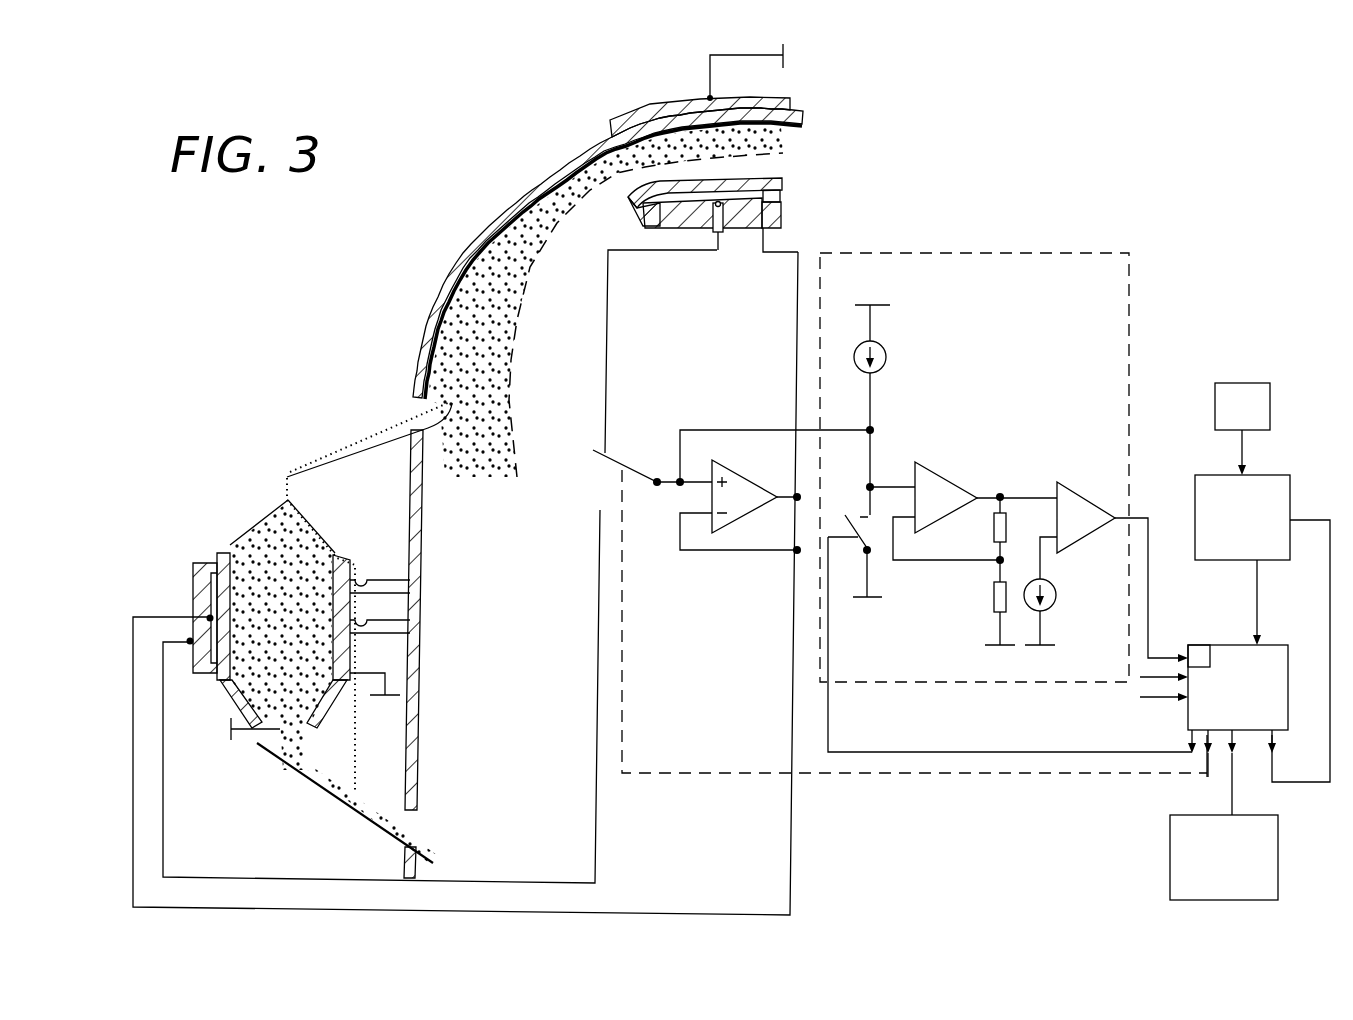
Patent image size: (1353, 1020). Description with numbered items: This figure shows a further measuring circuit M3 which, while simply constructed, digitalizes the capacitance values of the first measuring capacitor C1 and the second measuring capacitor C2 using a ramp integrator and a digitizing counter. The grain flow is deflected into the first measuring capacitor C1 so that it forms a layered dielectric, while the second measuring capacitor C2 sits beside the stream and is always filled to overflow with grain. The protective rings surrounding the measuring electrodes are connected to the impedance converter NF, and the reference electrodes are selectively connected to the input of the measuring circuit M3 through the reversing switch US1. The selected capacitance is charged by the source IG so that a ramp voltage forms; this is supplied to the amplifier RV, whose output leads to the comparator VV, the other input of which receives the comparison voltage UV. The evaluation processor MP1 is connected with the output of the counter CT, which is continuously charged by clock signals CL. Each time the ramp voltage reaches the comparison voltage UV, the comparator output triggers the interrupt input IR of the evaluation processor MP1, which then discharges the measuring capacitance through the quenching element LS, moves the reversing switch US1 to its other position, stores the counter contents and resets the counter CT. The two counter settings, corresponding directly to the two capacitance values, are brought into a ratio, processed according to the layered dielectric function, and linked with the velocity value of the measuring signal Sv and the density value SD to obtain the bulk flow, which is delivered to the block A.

The first measuring capacitor C1 is at (633, 178).
The second measuring capacitor C2 is at (302, 543).
The reversing switch US1 is at (731, 456).
The impedance converter NF is at (740, 496).
The current generator IG is at (892, 411).
The measuring circuit M3 is at (1052, 381).
The amplifier RV is at (963, 544).
The comparator amplifier VV is at (1122, 561).
The discharge switch LS is at (866, 535).
The comparison voltage UV is at (1061, 591).
The clock signals CL is at (1242, 429).
The counter CT is at (1262, 628).
The interrupt input IR is at (1200, 645).
The evaluation processor MP1 is at (1238, 730).
The velocity value of the measuring signal Sv is at (1142, 677).
The density value SD is at (1160, 698).
The display / output unit A is at (1224, 857).